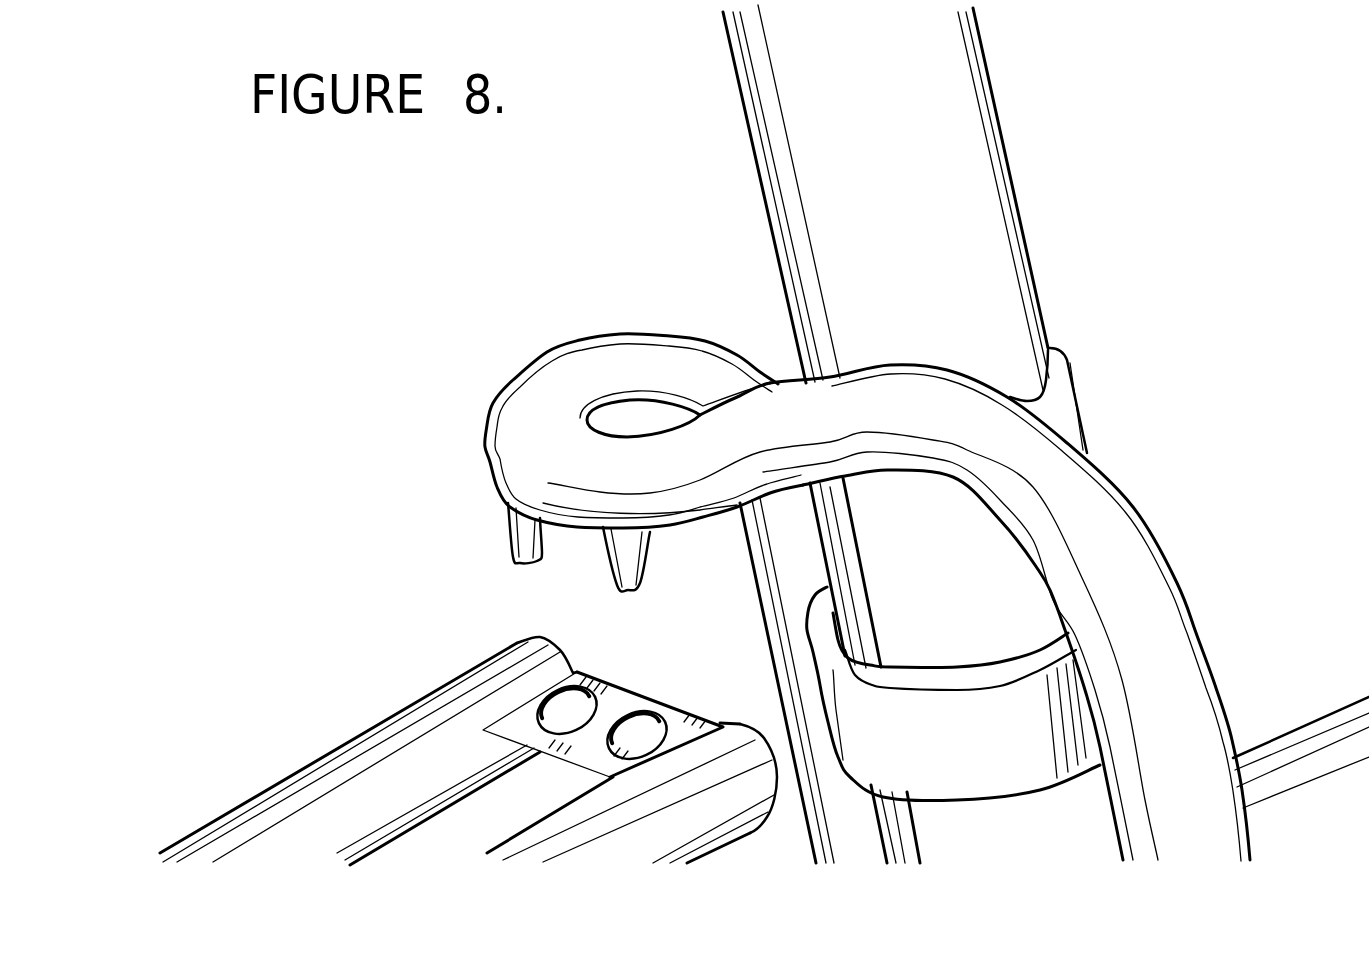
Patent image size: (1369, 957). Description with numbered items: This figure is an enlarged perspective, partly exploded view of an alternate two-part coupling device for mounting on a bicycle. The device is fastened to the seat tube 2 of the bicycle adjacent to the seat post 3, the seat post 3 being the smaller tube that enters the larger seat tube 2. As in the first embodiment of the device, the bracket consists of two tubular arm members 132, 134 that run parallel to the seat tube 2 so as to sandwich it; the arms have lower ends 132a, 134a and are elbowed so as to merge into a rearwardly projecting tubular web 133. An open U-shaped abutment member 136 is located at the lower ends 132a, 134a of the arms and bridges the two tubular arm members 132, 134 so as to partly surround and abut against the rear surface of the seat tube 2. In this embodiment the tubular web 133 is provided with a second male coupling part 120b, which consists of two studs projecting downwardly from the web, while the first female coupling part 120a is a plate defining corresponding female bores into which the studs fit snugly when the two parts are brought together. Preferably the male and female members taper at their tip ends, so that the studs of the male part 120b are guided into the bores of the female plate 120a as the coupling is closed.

The seat tube 2 is at (1008, 867).
The seat post 3 is at (878, 258).
The first female coupling part 120a is at (638, 737).
The second male coupling part 120b is at (610, 585).
The strap 132 is at (812, 847).
The strap loop end 132a is at (548, 350).
The tubular web 133 is at (558, 450).
The hook arm 134 is at (1147, 842).
The hook arm bend 134a is at (967, 367).
The collar ring 136 is at (908, 752).